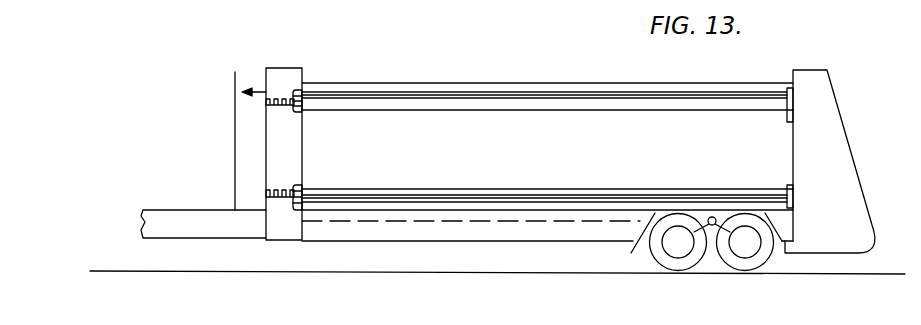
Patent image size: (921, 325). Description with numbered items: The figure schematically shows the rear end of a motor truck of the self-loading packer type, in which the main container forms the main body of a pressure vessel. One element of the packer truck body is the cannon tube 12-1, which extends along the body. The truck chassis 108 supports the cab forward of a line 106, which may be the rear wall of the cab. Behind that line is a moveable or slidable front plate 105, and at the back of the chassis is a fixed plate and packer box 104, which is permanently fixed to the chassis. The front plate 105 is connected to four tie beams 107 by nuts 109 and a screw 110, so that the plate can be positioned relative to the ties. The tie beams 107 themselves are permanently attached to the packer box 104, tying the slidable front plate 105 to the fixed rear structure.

The cannon tube 12-1 is at (613, 82).
The fixed plate and packer box 104 is at (815, 98).
The front plate 105 is at (292, 73).
The line 106 is at (236, 100).
The tie beams 107 is at (777, 195).
The truck chassis 108 is at (200, 222).
The nuts 109 is at (300, 110).
The screw 110 is at (283, 107).